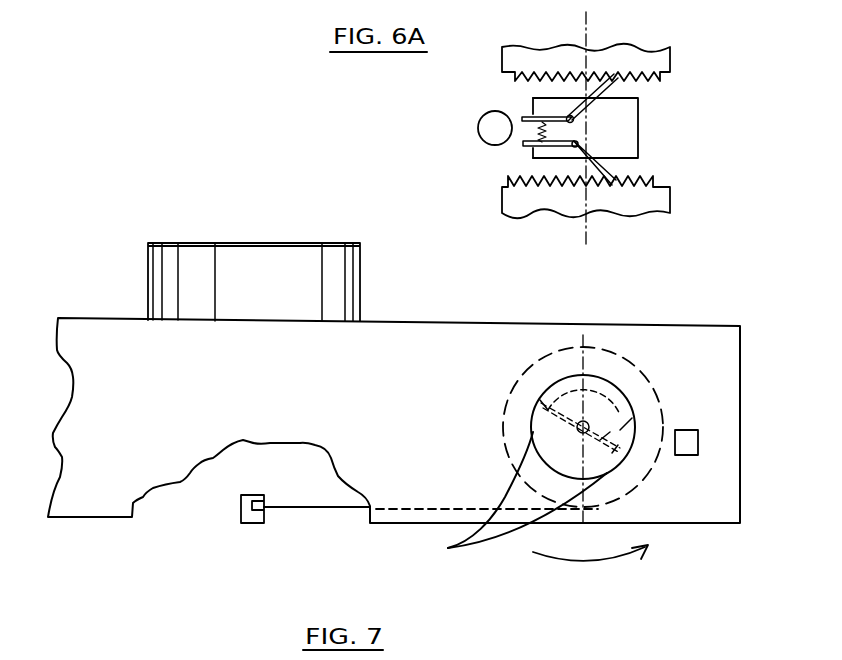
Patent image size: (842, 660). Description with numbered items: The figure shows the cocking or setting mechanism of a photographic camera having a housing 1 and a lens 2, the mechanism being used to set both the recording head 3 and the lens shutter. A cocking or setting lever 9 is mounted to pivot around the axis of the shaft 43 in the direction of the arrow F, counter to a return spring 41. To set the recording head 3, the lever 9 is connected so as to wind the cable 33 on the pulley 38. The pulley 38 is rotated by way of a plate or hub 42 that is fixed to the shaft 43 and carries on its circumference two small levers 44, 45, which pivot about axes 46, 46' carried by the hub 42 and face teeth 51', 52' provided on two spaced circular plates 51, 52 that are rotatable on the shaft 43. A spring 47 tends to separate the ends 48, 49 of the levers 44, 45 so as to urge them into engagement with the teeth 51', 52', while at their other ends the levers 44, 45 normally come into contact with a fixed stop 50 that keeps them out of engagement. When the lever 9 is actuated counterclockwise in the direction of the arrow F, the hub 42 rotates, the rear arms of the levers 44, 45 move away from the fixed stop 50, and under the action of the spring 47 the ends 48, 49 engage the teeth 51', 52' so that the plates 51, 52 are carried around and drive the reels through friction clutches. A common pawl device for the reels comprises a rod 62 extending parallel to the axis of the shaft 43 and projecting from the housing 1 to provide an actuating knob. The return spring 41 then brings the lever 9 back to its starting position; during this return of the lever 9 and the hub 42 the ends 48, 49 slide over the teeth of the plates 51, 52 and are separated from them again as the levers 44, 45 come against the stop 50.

In FIG. 7, the housing 1 is at (440, 322).
In FIG. 7, the lens 2 is at (200, 260).
In FIG. 7, the recording head 3 is at (253, 524).
In FIG. 7, the cocking or setting lever 9 is at (525, 502).
In FIG. 7, the cable 33 is at (333, 508).
In FIG. 7, the pulley 38 is at (657, 483).
In FIG. 7, the return spring 41 is at (657, 397).
In FIG. 6A, the plate or hub 42 is at (638, 128).
In FIG. 6A, the shaft 43 is at (583, 243).
In FIG. 6A, the small lever 44 is at (523, 118).
In FIG. 6A, the small lever 45 is at (522, 144).
In FIG. 6A, the pivot axis 46 is at (557, 67).
In FIG. 6A, the pivot axis 46' is at (523, 198).
In FIG. 6A, the spring 47 is at (537, 130).
In FIG. 6A, the lever end 48 is at (603, 72).
In FIG. 6A, the lever end 49 is at (613, 186).
In FIG. 6A, the fixed stop 50 is at (480, 124).
In FIG. 6A, the circular plate 51 is at (613, 62).
In FIG. 6A, the teeth 51' is at (695, 93).
In FIG. 6A, the circular plate 52 is at (613, 197).
In FIG. 6A, the teeth 52' is at (690, 171).
In FIG. 7, the rod 62 is at (690, 443).
In FIG. 7, the arrow F is at (597, 565).